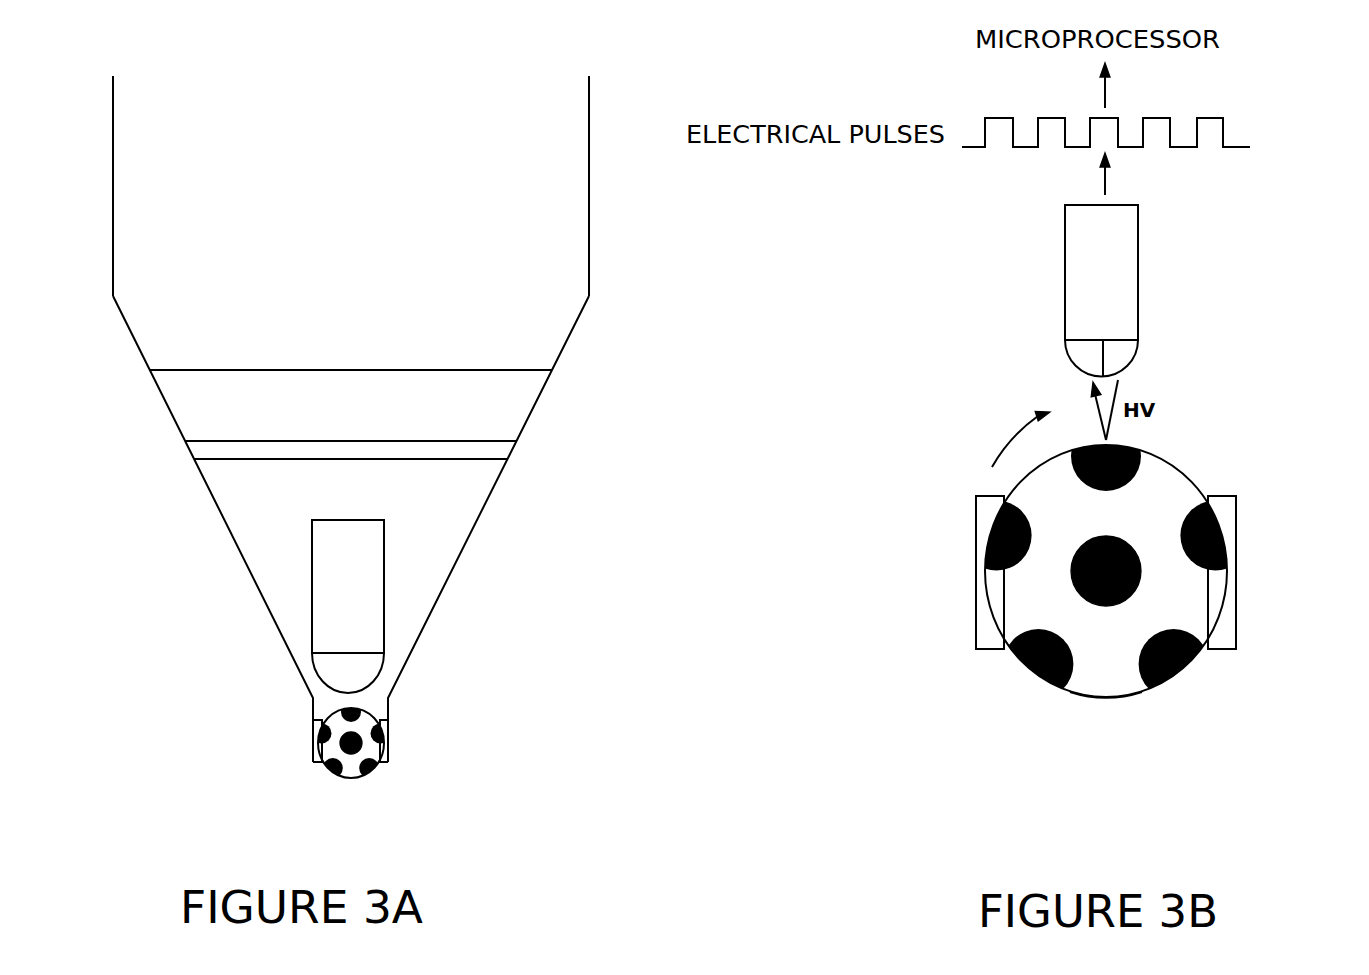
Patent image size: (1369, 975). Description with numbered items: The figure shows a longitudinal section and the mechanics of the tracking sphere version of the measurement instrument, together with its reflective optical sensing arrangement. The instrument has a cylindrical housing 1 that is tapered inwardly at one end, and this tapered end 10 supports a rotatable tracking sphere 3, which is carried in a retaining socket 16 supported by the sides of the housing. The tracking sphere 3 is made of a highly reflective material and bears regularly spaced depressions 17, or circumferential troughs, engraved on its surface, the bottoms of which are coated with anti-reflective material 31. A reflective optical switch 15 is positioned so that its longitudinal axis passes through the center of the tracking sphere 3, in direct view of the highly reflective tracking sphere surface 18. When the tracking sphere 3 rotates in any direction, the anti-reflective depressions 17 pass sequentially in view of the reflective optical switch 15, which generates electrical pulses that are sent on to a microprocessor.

In FIG. 3A, the cylindrical housing 1 is at (595, 276).
In FIG. 3A, the tapered end 10 is at (424, 649).
In FIG. 3A, the reflective optical switch 15 is at (397, 594).
In FIG. 3B, the reflective optical switch 15 is at (1045, 260).
In FIG. 3A, the retaining socket 16 is at (394, 743).
In FIG. 3B, the retaining socket 16 is at (1260, 572).
In FIG. 3A, the tracking sphere 3 is at (382, 784).
In FIG. 3B, the tracking sphere 3 is at (1047, 572).
In FIG. 3B, the depressions 17 is at (1016, 677).
In FIG. 3B, the anti-reflective material 31 is at (1199, 671).
In FIG. 3B, the highly reflective tracking sphere surface 18 is at (1111, 714).